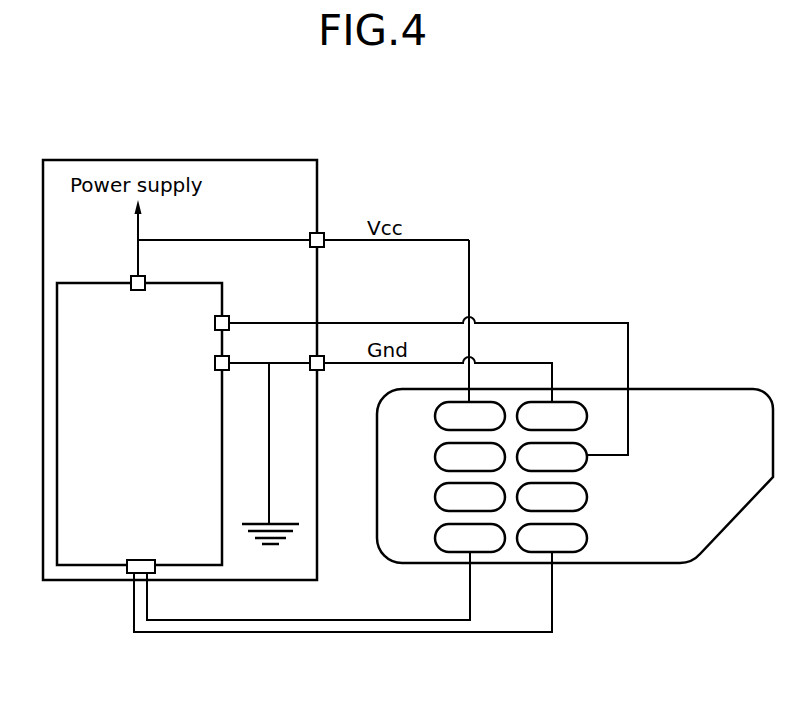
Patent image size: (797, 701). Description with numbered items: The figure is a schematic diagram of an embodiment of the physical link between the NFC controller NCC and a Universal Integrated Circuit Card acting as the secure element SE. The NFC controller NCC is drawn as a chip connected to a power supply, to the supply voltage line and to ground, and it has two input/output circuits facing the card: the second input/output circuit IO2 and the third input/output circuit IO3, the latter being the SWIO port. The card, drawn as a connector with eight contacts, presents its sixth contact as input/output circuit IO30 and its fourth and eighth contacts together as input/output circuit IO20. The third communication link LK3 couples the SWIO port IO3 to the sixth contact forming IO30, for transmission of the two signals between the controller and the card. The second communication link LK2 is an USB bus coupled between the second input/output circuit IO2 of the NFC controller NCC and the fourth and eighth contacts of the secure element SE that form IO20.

The NFC controller NCC is at (139, 424).
The secure element SE is at (575, 476).
The second input/output circuit IO2 is at (140, 558).
The third input/output circuit IO3 is at (214, 323).
The input/output circuit of the UICC IO20 is at (524, 553).
The contact C6 of the UICC IO30 is at (590, 464).
The second communication link LK2 is at (345, 633).
The third communication link LK3 is at (547, 320).